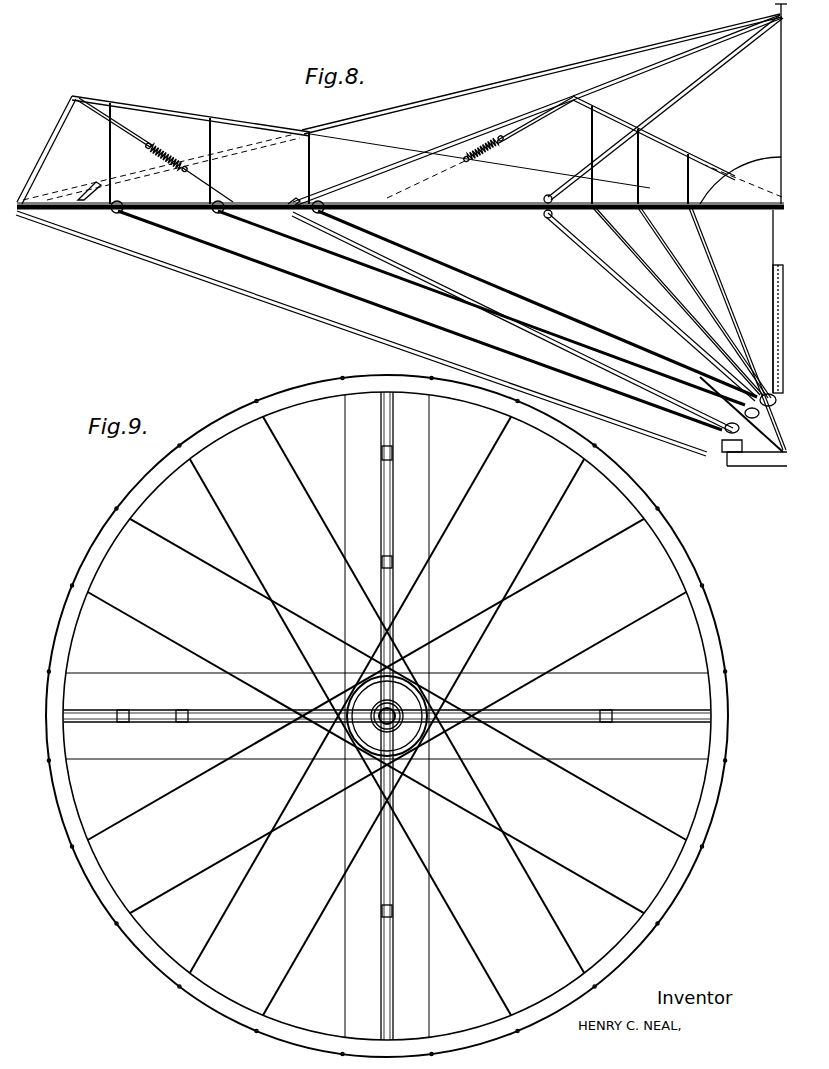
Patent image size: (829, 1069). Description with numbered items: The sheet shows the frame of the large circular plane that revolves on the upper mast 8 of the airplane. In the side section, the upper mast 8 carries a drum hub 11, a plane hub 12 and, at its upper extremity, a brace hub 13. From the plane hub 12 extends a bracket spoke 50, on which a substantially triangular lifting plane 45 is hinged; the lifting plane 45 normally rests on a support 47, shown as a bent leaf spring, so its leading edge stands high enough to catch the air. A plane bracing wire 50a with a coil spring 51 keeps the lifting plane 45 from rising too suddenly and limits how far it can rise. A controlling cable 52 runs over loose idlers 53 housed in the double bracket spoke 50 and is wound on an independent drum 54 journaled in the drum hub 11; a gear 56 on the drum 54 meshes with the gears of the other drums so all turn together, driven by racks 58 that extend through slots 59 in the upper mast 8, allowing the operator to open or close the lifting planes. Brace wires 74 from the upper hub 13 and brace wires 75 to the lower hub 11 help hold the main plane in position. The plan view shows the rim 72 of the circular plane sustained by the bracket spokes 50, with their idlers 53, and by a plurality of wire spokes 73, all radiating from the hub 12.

In FIG. 8, the upper mast 8 is at (772, 232).
In FIG. 8, the drum hub 11 is at (757, 468).
In FIG. 8, the plane hub 12 is at (748, 195).
In FIG. 9, the plane hub 12 is at (387, 716).
In FIG. 8, the brace hub 13 is at (766, 40).
In FIG. 8, the lifting plane 45 is at (57, 122).
In FIG. 8, the support 47 is at (82, 205).
In FIG. 8, the bracket spoke 50 is at (400, 219).
In FIG. 9, the bracket spoke 50 is at (380, 538).
In FIG. 8, the plane bracing wire 50a is at (92, 112).
In FIG. 8, the coil spring 51 is at (168, 168).
In FIG. 8, the controlling cable 52 is at (236, 255).
In FIG. 8, the idler 53 is at (117, 213).
In FIG. 9, the idler 53 is at (393, 450).
In FIG. 8, the drum 54 is at (722, 452).
In FIG. 8, the gear 56 is at (766, 406).
In FIG. 8, the rack 58 is at (773, 345).
In FIG. 8, the slot 59 is at (773, 306).
In FIG. 9, the rim 72 is at (104, 536).
In FIG. 9, the wire spoke 73 is at (338, 458).
In FIG. 8, the brace wire 74 is at (616, 50).
In FIG. 8, the brace wire 75 is at (306, 222).